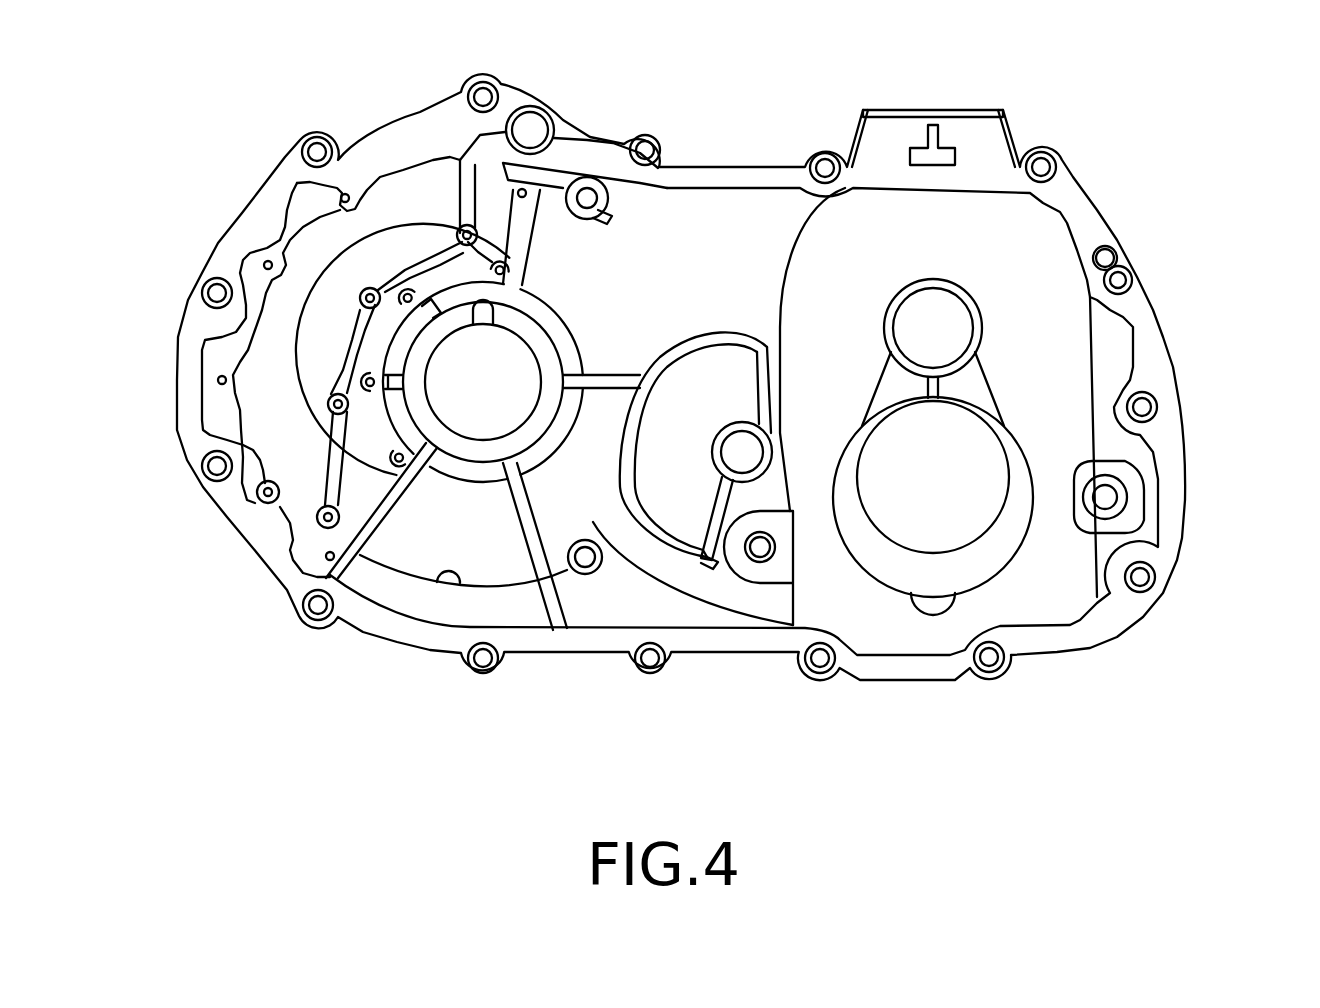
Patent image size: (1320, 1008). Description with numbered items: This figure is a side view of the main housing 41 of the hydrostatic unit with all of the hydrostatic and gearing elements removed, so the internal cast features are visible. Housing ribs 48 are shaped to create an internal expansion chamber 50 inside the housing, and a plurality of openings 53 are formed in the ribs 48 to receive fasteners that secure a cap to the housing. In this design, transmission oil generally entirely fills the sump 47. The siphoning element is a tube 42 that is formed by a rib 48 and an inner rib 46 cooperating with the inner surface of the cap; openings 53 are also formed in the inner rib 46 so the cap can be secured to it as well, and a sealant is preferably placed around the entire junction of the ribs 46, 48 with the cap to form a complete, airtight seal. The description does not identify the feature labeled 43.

The main housing 41 is at (753, 163).
The tube 42 is at (333, 350).
The right flange 43 is at (1150, 363).
The inner rib 46 is at (387, 273).
The sump 47 is at (712, 283).
The housing ribs 48 is at (517, 228).
The internal expansion chamber 50 is at (338, 329).
The openings 53 is at (345, 194).